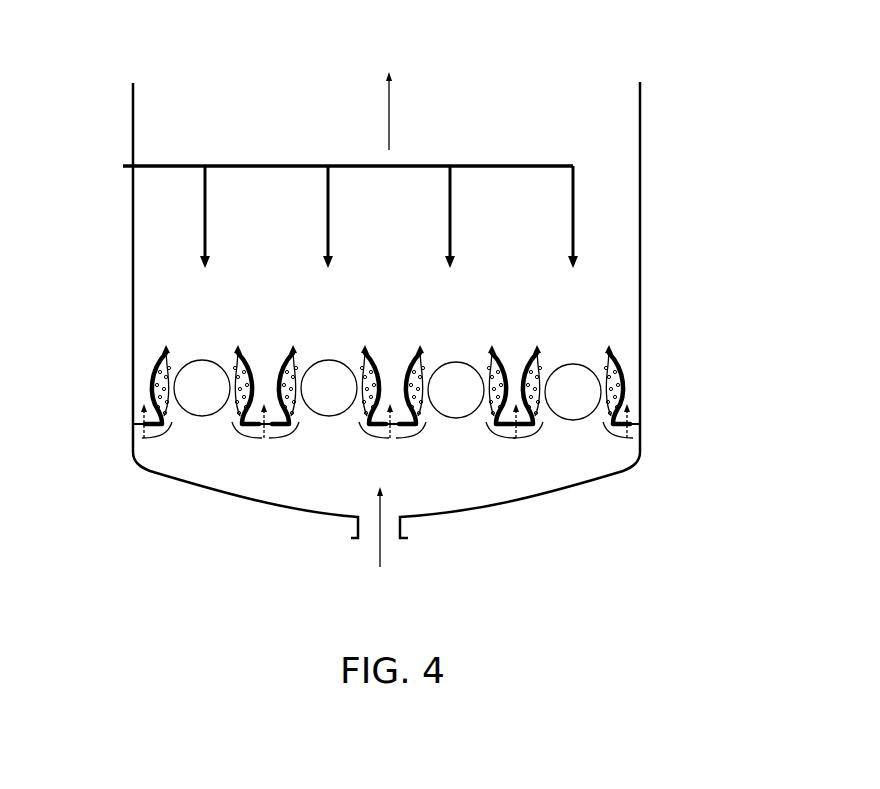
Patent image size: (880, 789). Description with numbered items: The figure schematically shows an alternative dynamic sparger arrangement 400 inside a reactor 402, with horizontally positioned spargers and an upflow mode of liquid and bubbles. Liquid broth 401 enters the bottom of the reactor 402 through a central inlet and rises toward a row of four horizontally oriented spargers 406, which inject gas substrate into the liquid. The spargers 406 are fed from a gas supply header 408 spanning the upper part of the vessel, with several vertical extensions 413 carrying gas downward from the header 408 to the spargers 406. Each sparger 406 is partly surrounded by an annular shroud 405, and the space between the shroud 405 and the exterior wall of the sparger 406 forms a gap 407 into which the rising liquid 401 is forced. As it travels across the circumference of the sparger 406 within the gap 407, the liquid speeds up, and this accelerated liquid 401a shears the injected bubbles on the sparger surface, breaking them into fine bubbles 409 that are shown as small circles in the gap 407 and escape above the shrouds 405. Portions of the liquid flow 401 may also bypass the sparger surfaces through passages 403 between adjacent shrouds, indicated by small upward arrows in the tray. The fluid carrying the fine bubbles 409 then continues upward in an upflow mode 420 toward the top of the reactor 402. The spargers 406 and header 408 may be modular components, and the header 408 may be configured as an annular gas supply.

The reactor system 400 is at (613, 67).
The liquid broth 401 is at (388, 508).
The accelerated liquid 401a is at (540, 362).
The reactor 402 is at (647, 212).
The passages 403 is at (263, 430).
The annular shroud 405 is at (502, 367).
The sparger 406 is at (338, 358).
The gap 407 is at (177, 370).
The gas supply header 408 is at (125, 172).
The fine bubbles 409 is at (303, 373).
The vertical extensions 413 is at (318, 214).
The upflow mode 420 is at (400, 118).